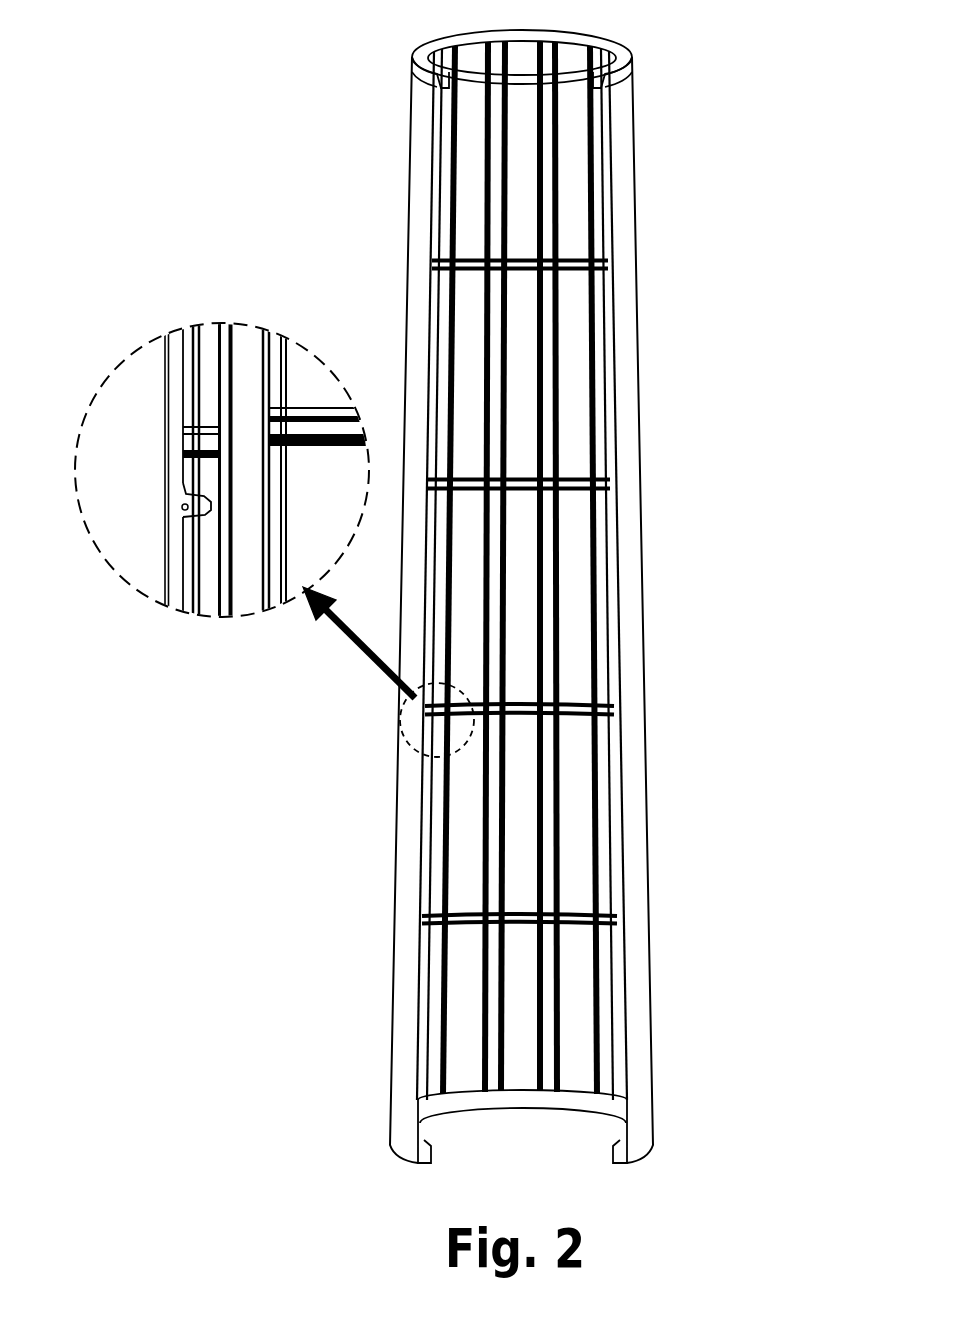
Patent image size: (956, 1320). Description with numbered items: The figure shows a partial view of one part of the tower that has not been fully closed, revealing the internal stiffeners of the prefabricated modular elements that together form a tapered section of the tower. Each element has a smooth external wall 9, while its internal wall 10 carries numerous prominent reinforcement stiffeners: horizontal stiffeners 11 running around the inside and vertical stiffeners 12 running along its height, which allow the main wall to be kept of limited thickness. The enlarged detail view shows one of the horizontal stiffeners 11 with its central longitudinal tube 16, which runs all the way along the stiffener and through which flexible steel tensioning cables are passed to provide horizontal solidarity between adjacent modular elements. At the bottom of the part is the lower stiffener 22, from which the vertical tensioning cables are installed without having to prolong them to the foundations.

The external wall 9 is at (636, 828).
The internal wall 10 is at (520, 1020).
The horizontal reinforcement stiffener 11 is at (316, 425).
The vertical reinforcement stiffener 12 is at (497, 118).
The central longitudinal tube 16 is at (185, 510).
The lower stiffener 22 is at (622, 1153).